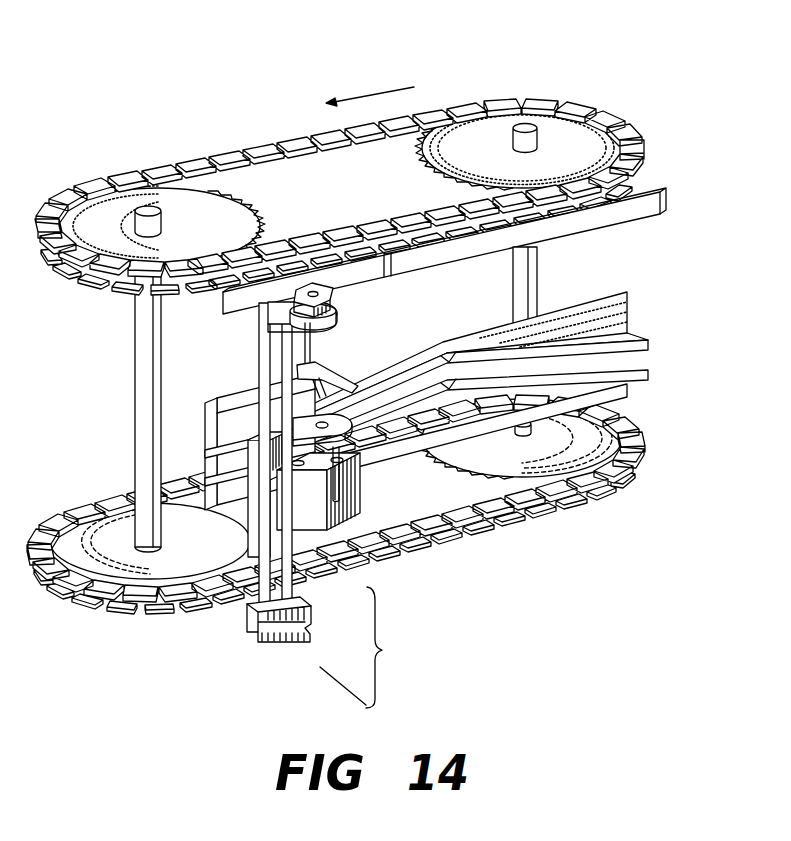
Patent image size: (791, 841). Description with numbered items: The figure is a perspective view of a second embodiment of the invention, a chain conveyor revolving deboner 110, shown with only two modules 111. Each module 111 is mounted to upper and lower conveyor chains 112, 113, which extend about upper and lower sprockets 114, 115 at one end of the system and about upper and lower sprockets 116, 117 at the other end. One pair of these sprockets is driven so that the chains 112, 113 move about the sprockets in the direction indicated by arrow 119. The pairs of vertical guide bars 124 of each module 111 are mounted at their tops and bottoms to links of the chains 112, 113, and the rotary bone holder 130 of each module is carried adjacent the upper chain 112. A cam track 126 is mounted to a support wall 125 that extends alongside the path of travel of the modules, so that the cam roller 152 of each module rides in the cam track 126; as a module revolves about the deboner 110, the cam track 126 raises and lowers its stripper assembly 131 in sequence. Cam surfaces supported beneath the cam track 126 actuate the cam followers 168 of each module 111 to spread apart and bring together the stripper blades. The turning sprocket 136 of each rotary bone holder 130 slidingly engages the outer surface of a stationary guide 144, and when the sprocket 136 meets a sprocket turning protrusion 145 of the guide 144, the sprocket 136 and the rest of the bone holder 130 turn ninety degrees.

The chain conveyor revolving deboner 110 is at (166, 50).
The module 111 is at (371, 647).
The upper conveyor chain 112 is at (220, 160).
The lower conveyor chain 113 is at (155, 588).
The upper sprocket 114 is at (133, 213).
The lower sprocket 115 is at (121, 540).
The upper sprocket 116 is at (558, 138).
The lower sprocket 117 is at (627, 413).
The arrow 119 is at (361, 84).
The vertical guide bars 124 is at (284, 343).
The support wall 125 is at (236, 417).
The cam track 126 is at (416, 385).
The rotary bone holder 130 is at (327, 353).
The stripper assembly 131 is at (364, 496).
The turning sprocket 136 is at (334, 298).
The stationary guide 144 is at (460, 247).
The sprocket turning protrusion 145 is at (392, 272).
The cam roller 152 is at (224, 470).
The cam follower 168 is at (250, 513).